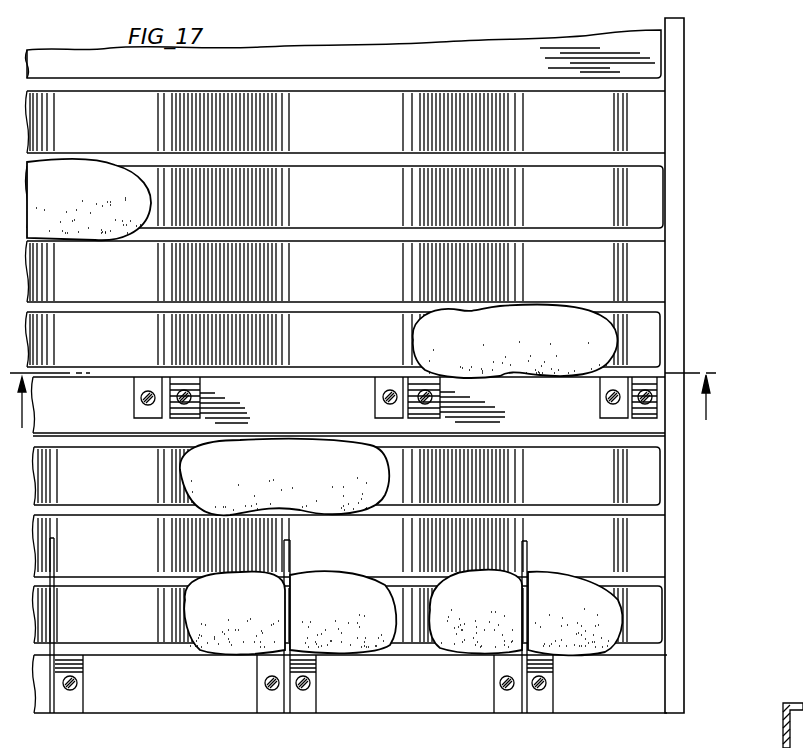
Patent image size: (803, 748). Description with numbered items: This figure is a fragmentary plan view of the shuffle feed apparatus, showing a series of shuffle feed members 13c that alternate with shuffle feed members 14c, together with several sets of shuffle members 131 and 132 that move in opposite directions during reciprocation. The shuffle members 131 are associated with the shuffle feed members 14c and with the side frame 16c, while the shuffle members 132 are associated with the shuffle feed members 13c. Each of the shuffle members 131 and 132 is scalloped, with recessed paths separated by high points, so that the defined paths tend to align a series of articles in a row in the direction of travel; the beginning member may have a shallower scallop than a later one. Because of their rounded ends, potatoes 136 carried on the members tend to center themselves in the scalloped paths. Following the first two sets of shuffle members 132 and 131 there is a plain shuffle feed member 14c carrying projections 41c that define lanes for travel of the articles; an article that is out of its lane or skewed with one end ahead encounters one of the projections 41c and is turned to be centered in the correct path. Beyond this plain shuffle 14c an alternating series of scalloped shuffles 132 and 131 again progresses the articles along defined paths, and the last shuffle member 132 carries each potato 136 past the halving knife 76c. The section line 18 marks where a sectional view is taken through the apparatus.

The shuffle feed member 13c is at (648, 63).
The shuffle member 131 is at (657, 125).
The shuffle member 132 is at (648, 193).
The projection 41c is at (623, 388).
The shuffle feed member 14c is at (657, 425).
The section line 18 is at (362, 413).
The side frame 16c is at (683, 516).
The halving knife 76c is at (530, 556).
The potato 136 is at (582, 650).